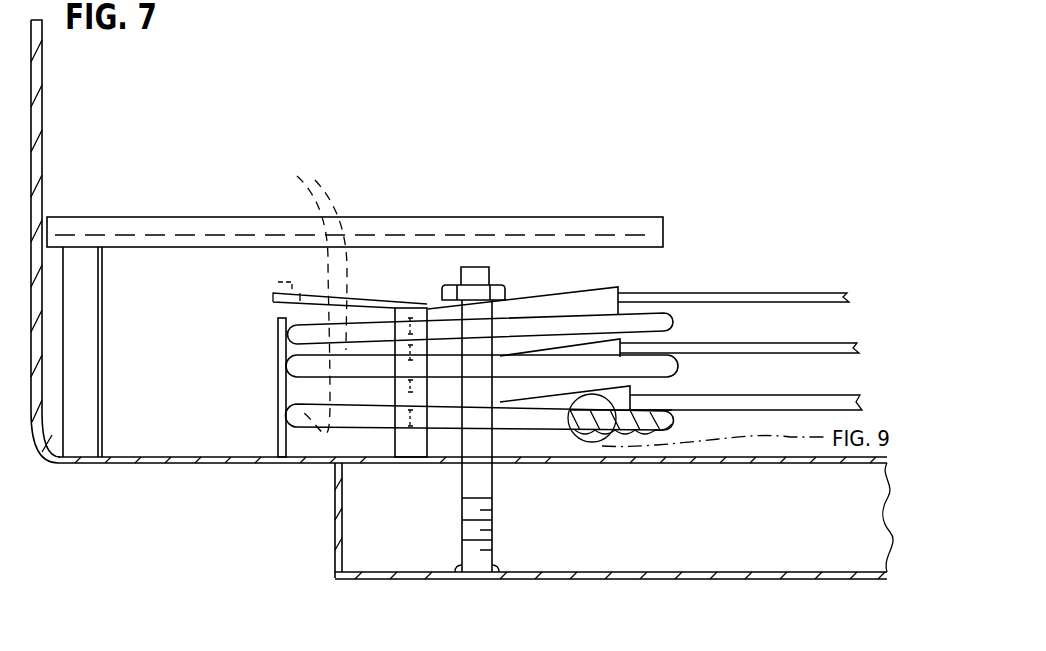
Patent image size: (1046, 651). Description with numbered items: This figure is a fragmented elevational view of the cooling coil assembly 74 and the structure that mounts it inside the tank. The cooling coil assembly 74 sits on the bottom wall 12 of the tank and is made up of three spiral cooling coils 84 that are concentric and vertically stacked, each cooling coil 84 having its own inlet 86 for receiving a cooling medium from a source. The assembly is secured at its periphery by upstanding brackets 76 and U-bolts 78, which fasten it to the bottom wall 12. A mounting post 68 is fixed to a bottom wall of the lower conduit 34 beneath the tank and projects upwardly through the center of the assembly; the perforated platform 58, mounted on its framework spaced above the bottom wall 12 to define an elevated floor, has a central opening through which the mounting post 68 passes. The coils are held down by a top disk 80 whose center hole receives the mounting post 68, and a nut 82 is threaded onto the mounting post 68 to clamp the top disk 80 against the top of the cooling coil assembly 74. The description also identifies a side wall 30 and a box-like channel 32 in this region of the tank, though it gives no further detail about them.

The bottom wall 12 is at (150, 463).
The side wall 30 is at (42, 68).
The channel box 32 is at (565, 462).
The lower conduit 34 is at (760, 580).
The perforated platform 58 is at (180, 217).
The mounting post 68 is at (477, 482).
The cooling coil assembly 74 is at (618, 287).
The upstanding brackets 76 is at (425, 307).
The U-bolts 78 is at (287, 372).
The top disk 80 is at (368, 300).
The nut 82 is at (475, 292).
The spiral cooling coils 84 is at (675, 417).
The inlet 86 is at (793, 395).